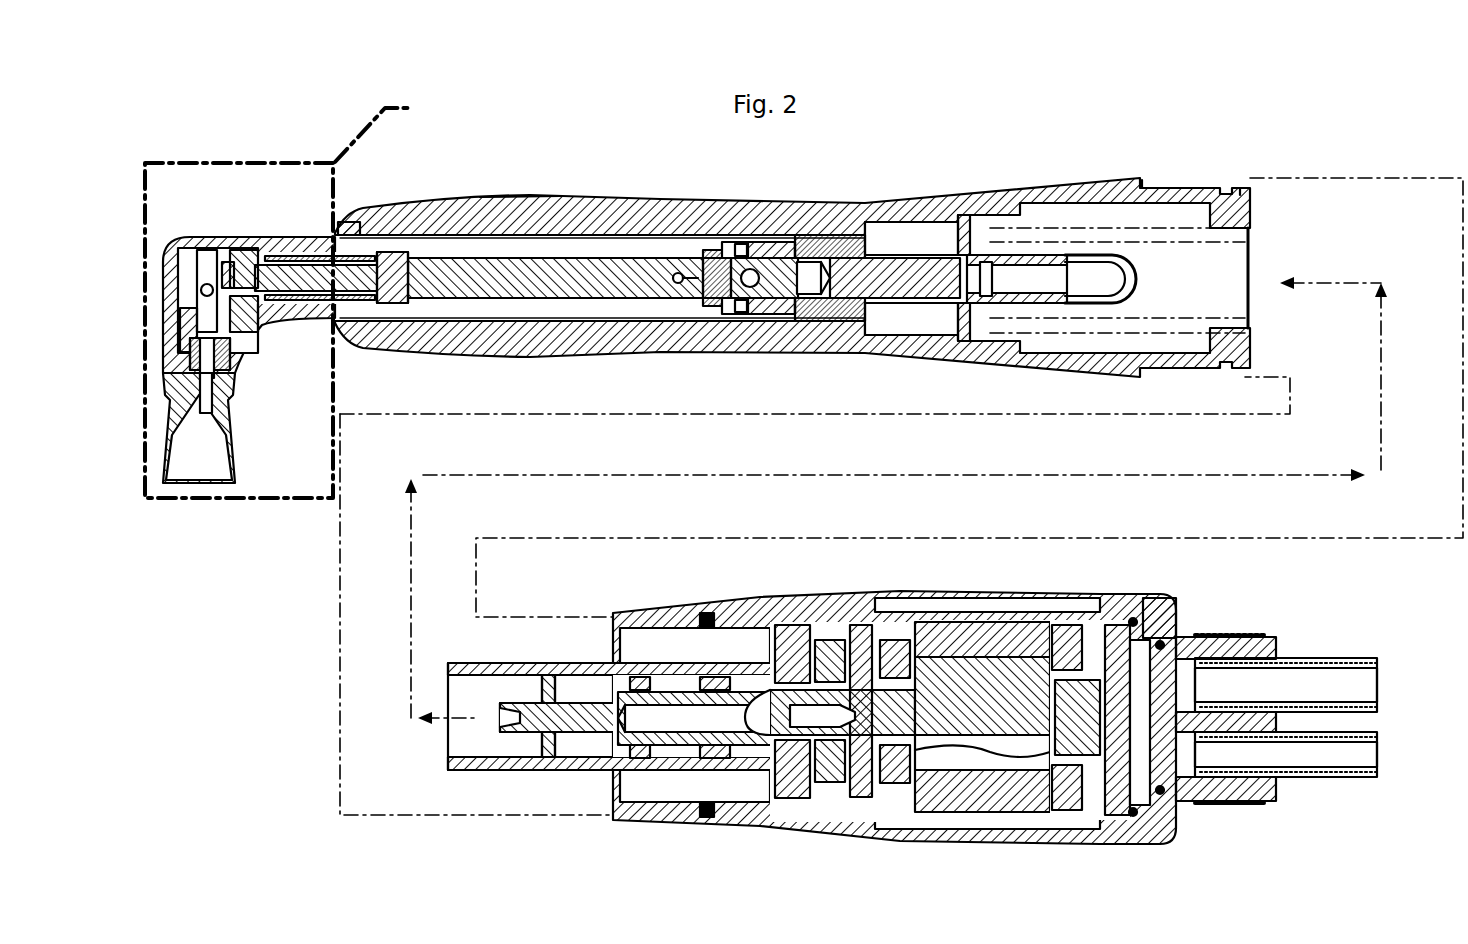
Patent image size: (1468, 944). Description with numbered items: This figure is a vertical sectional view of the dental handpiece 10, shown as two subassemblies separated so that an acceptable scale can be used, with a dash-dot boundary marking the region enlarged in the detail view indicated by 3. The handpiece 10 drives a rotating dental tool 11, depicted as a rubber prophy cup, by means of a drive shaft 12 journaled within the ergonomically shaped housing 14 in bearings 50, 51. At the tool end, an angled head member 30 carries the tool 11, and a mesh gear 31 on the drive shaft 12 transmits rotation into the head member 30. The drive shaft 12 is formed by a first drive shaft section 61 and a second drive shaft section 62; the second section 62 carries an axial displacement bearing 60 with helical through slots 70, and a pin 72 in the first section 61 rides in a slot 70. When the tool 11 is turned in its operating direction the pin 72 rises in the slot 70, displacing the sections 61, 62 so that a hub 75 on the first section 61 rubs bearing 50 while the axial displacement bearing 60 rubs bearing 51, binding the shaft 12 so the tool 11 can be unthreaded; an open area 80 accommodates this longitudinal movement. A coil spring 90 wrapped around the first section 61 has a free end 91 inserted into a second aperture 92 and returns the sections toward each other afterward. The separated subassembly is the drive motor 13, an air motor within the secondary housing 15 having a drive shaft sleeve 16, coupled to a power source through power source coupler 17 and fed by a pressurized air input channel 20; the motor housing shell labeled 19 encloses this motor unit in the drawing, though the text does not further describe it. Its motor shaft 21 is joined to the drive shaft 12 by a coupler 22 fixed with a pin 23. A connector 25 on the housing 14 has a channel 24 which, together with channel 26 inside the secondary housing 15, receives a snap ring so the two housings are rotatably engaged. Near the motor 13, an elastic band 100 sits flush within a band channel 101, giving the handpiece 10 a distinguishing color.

The handpiece 10 is at (1212, 83).
The detail region of FIG. 3 is at (289, 300).
The dental tool 11 is at (228, 440).
The drive shaft 12 is at (525, 278).
The drive motor 13 is at (992, 845).
The housing 14 is at (452, 205).
The secondary housing 15 is at (853, 840).
The drive shaft sleeve 16 is at (510, 772).
The power source coupler 17 is at (1272, 803).
The motor housing 19 is at (660, 822).
The pressurized air input channel 20 is at (1370, 777).
The motor shaft 21 is at (548, 770).
The coupler 22 is at (1030, 250).
The pin 23 is at (978, 290).
The channel 24 is at (1238, 186).
The connector 25 is at (1168, 180).
The channel 26 is at (720, 812).
The angled head member 30 is at (192, 245).
The mesh gear 31 is at (235, 250).
The bearing 50 is at (372, 226).
The bearing 51 is at (870, 225).
The axial displacement bearing 60 is at (812, 262).
The first drive shaft section 61 is at (508, 200).
The second drive shaft section 62 is at (915, 252).
The helical through slot 70 is at (750, 250).
The pin 72 is at (748, 300).
The hub 75 is at (400, 300).
The open area 80 is at (822, 240).
The coil spring 90 is at (718, 292).
The free end 91 is at (685, 300).
The second aperture 92 is at (695, 260).
The elastic band 100 is at (1135, 600).
The band channel 101 is at (1178, 620).